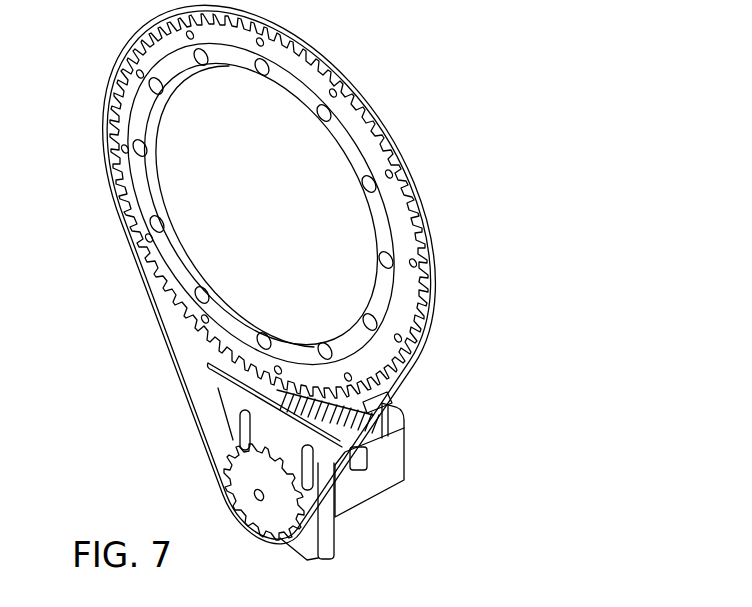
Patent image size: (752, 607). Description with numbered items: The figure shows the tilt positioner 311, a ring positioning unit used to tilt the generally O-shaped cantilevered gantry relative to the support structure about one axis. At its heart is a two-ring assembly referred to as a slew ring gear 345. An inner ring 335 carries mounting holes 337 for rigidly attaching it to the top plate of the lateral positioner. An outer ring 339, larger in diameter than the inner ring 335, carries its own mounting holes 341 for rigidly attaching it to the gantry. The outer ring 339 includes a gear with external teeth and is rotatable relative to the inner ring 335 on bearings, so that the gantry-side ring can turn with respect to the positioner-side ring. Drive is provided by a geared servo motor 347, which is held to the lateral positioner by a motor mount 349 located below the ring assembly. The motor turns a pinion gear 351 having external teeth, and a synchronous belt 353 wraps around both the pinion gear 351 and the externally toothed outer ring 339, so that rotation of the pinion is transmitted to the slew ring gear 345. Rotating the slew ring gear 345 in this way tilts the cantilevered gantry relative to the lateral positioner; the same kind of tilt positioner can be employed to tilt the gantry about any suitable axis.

The tilt positioner 311 is at (78, 41).
The inner ring 335 is at (372, 258).
The mounting holes 337 is at (370, 183).
The outer ring 339 is at (390, 222).
The mounting holes 341 is at (333, 103).
The slew ring gear 345 is at (387, 328).
The geared servo motor 347 is at (392, 466).
The motor mount 349 is at (288, 442).
The pinion gear 351 is at (270, 517).
The synchronous belt 353 is at (417, 296).